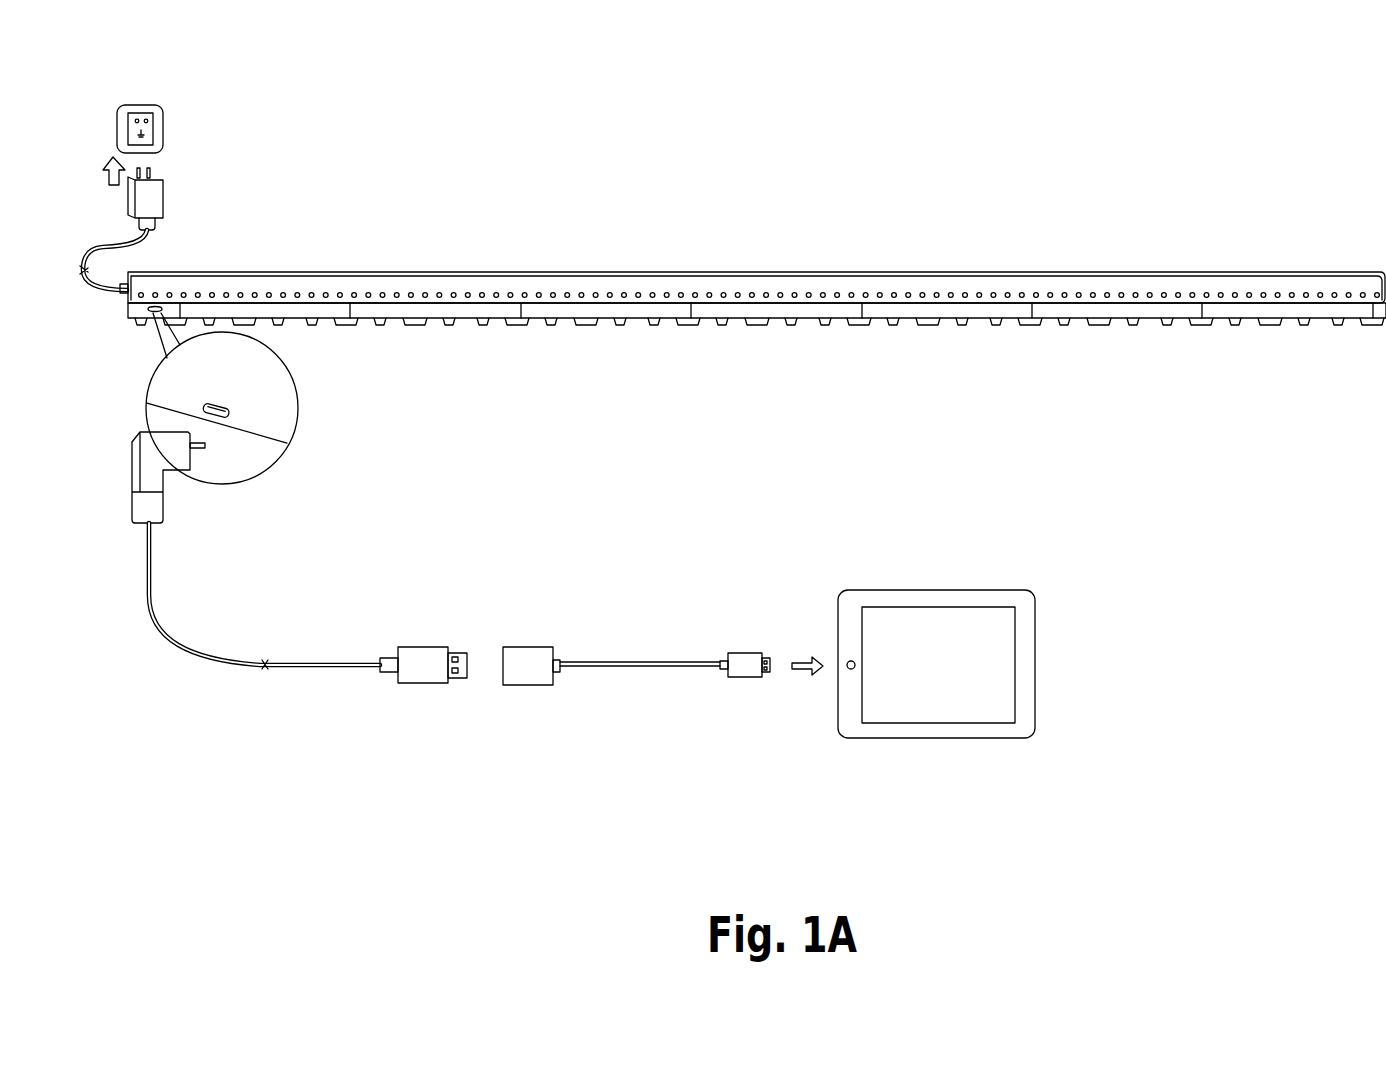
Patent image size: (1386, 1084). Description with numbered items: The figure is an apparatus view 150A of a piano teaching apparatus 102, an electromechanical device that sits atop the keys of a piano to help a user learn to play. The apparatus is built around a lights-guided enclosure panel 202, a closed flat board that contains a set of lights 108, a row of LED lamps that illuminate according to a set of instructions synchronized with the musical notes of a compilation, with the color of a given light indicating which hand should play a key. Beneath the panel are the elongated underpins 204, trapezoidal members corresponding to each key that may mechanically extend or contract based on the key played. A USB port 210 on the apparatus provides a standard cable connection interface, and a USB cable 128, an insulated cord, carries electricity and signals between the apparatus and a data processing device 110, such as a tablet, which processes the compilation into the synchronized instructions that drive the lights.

The piano teaching apparatus 102 is at (370, 138).
The set of lights 108 is at (597, 295).
The lights-guided enclosure panel 202 is at (915, 285).
The elongated underpins 204 is at (420, 325).
The USB port 210 is at (230, 422).
The USB cable 128 is at (615, 668).
The data processing device 110 is at (967, 595).
The apparatus view 150A is at (1223, 835).